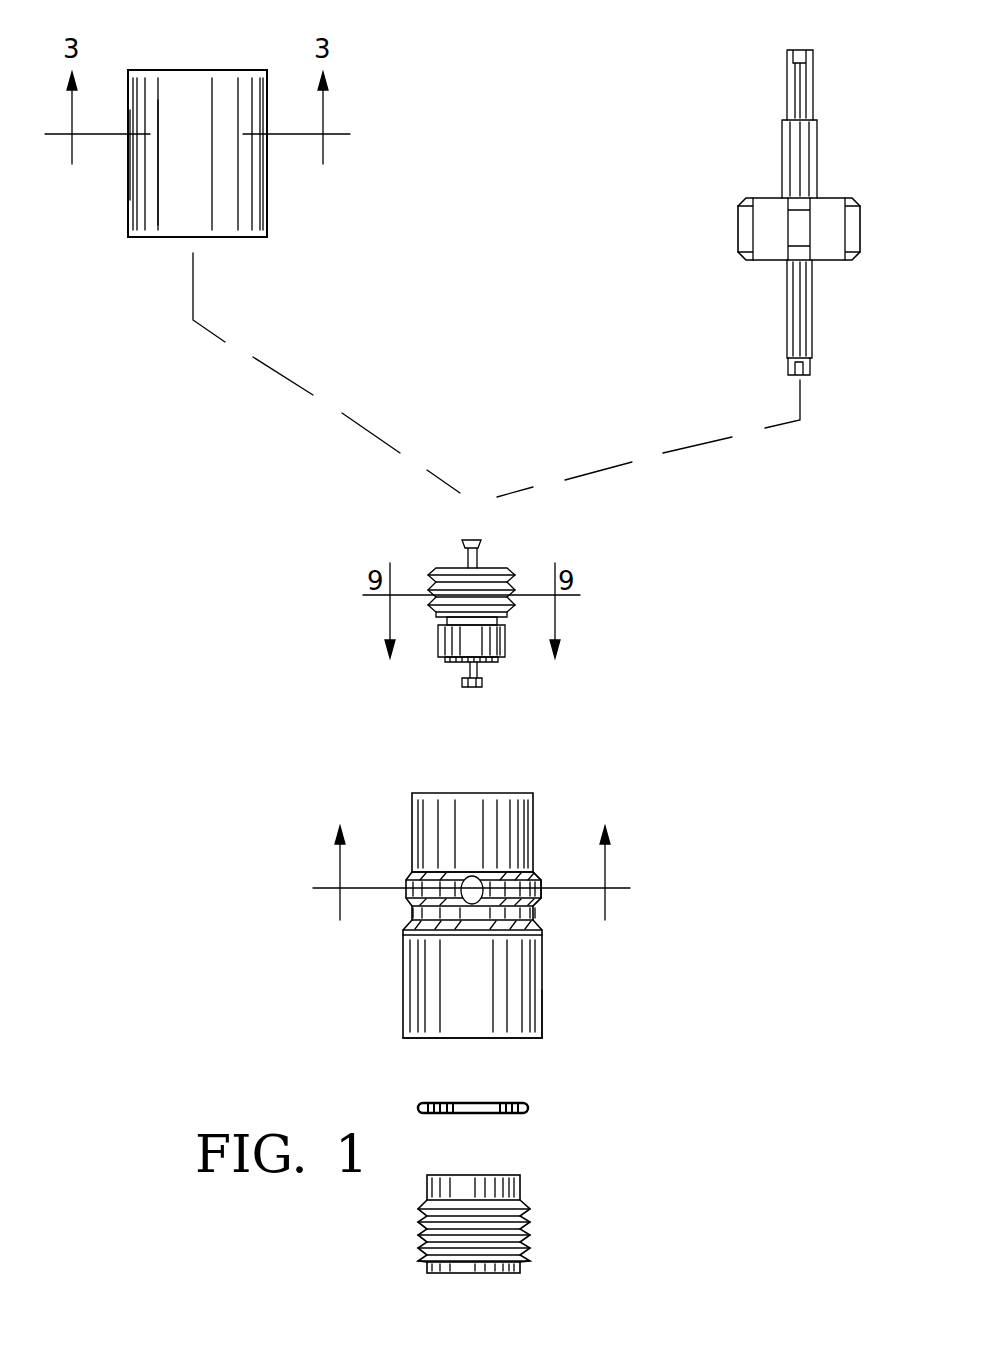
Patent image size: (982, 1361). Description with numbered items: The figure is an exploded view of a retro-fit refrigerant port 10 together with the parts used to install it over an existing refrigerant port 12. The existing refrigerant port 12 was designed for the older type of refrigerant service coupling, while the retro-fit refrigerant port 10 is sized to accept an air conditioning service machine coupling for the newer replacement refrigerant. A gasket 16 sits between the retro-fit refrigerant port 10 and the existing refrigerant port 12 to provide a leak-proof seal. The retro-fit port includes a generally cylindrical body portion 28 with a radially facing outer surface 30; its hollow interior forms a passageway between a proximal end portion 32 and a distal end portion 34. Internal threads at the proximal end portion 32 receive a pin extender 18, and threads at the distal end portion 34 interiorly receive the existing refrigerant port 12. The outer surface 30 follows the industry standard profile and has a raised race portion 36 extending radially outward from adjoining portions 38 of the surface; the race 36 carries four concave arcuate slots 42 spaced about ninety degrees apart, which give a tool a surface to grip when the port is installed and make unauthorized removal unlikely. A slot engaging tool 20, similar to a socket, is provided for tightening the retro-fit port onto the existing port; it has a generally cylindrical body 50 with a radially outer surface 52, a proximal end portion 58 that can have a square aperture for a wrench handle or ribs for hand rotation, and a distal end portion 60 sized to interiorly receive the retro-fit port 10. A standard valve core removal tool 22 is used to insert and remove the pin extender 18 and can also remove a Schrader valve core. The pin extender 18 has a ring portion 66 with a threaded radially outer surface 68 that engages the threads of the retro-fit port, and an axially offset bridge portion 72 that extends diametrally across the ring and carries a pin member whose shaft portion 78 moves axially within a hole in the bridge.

The retro-fit refrigerant port 10 is at (510, 879).
The existing refrigerant port 12 is at (557, 1210).
The gasket 16 is at (555, 1104).
The pin extender 18 is at (536, 613).
The slot engaging tool 20 is at (232, 153).
The valve core removal tool 22 is at (681, 196).
The body portion 28 is at (567, 985).
The radially facing outer surface 30 is at (545, 1015).
The proximal end portion 32 is at (555, 737).
The distal end portion 34 is at (403, 1046).
The raised race portion 36 is at (538, 875).
The adjoining portions 38 is at (412, 860).
The arcuate slots 42 is at (472, 888).
The cylindrical body 50 is at (128, 160).
The radially outer surface 52 is at (150, 215).
The proximal end portion 58 is at (191, 57).
The distal end portion 60 is at (245, 264).
The ring portion 66 is at (483, 565).
The threaded radially outer surface 68 is at (440, 568).
The bridge portion 72 is at (493, 648).
The shaft portion 78 is at (468, 668).